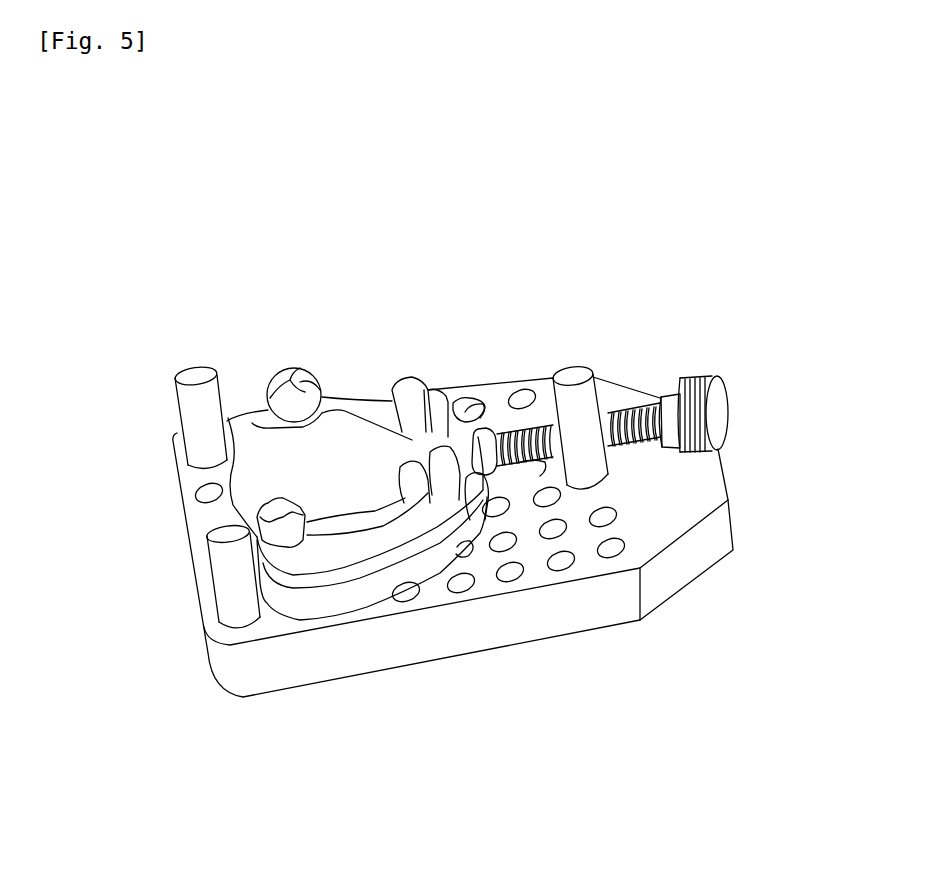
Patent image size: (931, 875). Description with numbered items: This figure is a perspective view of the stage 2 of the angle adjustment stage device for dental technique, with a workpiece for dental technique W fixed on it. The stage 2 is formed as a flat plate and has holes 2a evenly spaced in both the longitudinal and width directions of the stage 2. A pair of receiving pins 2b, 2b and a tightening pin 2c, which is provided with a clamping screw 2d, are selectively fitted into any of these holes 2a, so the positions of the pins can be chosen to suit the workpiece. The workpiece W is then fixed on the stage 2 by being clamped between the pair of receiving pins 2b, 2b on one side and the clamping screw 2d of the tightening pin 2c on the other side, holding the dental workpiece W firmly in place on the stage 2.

The stage 2 is at (679, 515).
The holes 2a is at (517, 400).
The receiving pins 2b is at (190, 408).
The tightening pin 2c is at (572, 373).
The clamping screw 2d is at (622, 413).
The workpiece for dental technique W is at (344, 430).